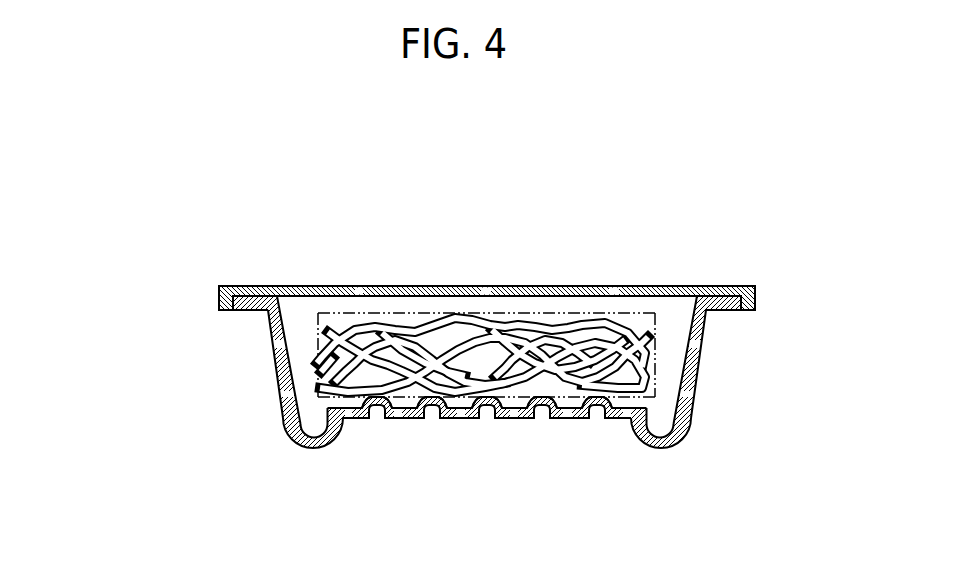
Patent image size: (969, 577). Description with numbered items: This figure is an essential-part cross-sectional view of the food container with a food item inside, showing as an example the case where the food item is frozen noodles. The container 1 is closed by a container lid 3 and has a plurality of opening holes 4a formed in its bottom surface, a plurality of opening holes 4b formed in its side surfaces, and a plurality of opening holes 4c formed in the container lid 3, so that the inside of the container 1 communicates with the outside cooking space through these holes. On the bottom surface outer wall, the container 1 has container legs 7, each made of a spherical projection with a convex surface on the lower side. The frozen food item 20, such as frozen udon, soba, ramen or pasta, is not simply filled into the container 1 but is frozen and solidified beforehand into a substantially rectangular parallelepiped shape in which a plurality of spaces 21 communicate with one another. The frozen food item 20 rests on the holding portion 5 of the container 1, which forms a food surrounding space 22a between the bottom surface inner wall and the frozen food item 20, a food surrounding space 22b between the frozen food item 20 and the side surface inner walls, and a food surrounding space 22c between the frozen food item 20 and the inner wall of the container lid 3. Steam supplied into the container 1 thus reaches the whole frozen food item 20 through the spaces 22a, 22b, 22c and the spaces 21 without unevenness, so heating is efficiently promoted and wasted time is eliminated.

The container 1 is at (212, 248).
The container lid 3 is at (515, 287).
The opening holes 4a is at (403, 418).
The opening holes 4b is at (270, 347).
The opening holes 4c is at (613, 287).
The holding portion 5 is at (376, 418).
The container legs 7 is at (315, 448).
The frozen food item 20 is at (482, 264).
The spaces 21 is at (400, 353).
The food surrounding space 22a is at (575, 400).
The food surrounding space 22b is at (307, 365).
The food surrounding space 22c is at (375, 305).